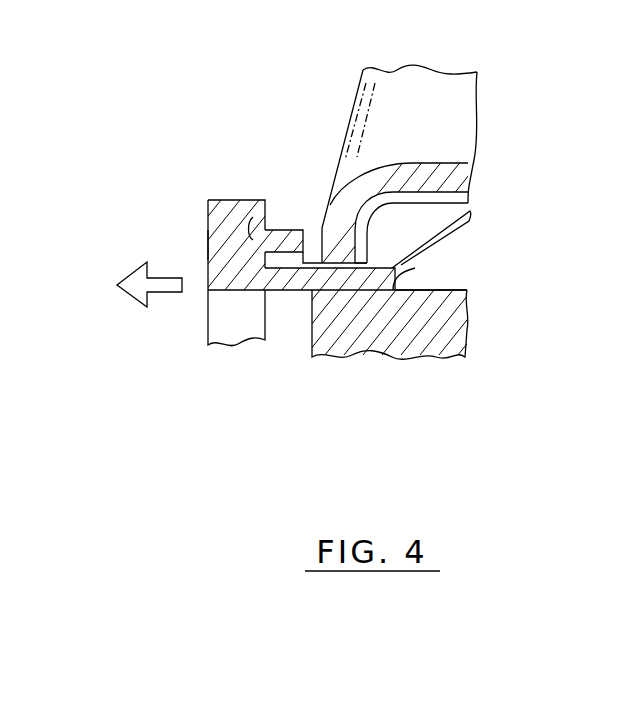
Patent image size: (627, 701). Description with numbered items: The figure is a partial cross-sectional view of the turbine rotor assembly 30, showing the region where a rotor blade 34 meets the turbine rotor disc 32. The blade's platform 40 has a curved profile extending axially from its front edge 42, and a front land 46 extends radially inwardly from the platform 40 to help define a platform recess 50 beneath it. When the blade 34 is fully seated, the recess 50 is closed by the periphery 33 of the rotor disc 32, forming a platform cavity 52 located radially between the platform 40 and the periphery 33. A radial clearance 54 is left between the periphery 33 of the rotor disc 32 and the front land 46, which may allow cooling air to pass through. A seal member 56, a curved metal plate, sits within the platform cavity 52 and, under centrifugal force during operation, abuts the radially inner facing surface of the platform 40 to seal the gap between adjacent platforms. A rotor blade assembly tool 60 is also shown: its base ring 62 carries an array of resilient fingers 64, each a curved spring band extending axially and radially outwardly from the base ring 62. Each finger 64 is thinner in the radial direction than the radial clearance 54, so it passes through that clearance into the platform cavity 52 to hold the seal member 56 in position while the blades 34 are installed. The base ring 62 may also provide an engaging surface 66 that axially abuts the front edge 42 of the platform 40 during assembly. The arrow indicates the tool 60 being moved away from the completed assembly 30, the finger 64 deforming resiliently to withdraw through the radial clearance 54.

The turbine rotor assembly 30 is at (555, 168).
The turbine rotor disc 32 is at (467, 332).
The periphery of the rotor disc 33 is at (410, 281).
The rotor blade 34 is at (348, 107).
The platform segment 40 is at (412, 163).
The front edge 42 is at (270, 198).
The front land 46 is at (300, 226).
The platform recess 50 is at (402, 221).
The platform cavity 52 is at (415, 268).
The radial clearance 54 is at (305, 291).
The seal member 56 is at (367, 240).
The rotor blade assembly tool 60 is at (208, 200).
The base ring 62 is at (208, 247).
The resilient finger 64 is at (472, 213).
The engaging surface 66 is at (268, 326).